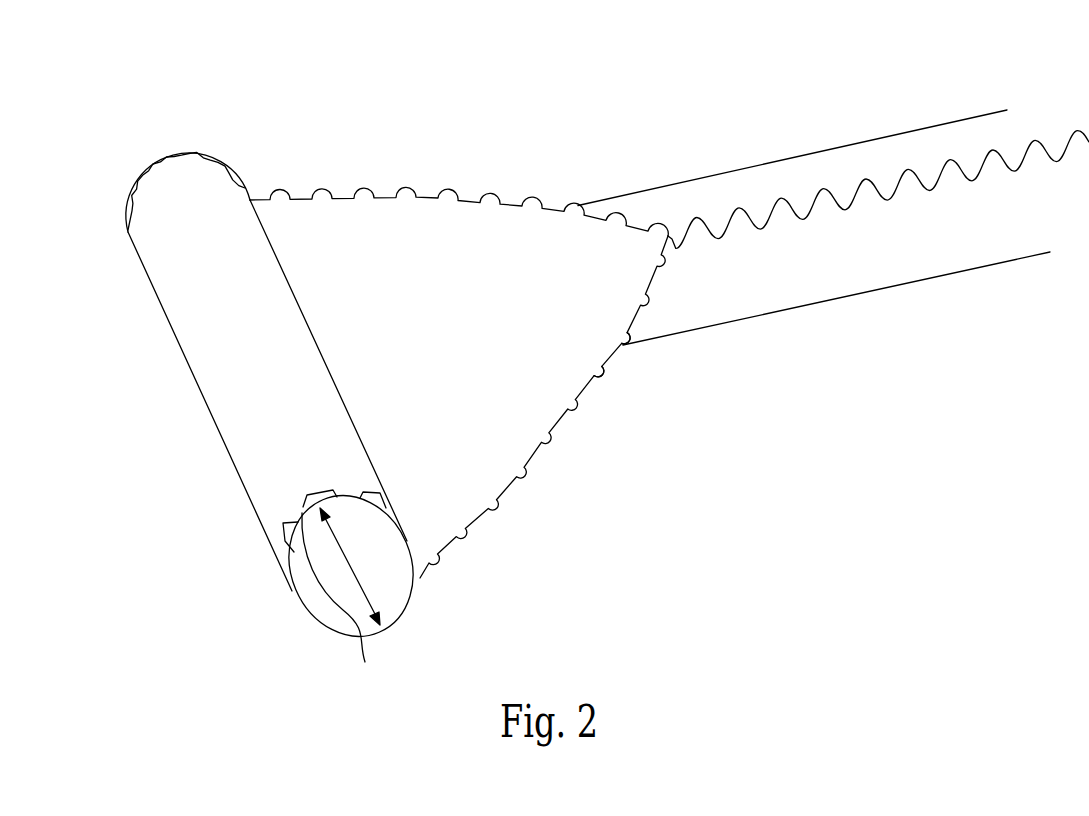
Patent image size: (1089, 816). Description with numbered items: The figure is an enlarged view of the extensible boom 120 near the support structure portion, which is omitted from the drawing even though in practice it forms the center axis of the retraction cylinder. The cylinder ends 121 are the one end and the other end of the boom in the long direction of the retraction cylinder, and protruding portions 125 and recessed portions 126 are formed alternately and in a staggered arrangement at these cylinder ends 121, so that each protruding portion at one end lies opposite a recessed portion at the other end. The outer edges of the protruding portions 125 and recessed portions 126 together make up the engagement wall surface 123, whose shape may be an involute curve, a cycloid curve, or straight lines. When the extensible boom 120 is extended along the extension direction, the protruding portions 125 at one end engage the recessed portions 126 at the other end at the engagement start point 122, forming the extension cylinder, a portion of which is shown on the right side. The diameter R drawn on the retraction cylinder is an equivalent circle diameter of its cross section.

The extensible boom 120 is at (837, 162).
The cylinder ends 121 is at (158, 153).
The engagement start point 122 is at (667, 243).
The engagement wall surface 123 is at (473, 188).
The protruding portions 125 is at (600, 380).
The recessed portions 126 is at (577, 395).